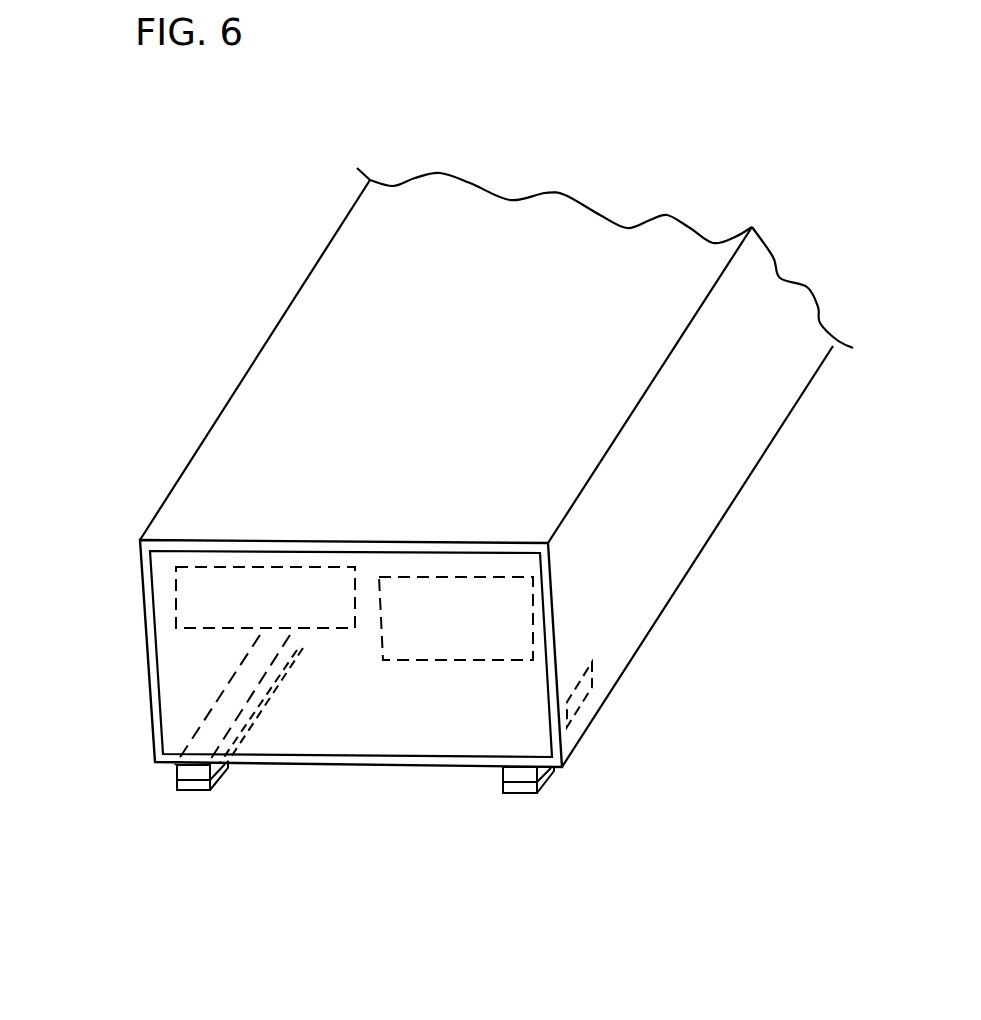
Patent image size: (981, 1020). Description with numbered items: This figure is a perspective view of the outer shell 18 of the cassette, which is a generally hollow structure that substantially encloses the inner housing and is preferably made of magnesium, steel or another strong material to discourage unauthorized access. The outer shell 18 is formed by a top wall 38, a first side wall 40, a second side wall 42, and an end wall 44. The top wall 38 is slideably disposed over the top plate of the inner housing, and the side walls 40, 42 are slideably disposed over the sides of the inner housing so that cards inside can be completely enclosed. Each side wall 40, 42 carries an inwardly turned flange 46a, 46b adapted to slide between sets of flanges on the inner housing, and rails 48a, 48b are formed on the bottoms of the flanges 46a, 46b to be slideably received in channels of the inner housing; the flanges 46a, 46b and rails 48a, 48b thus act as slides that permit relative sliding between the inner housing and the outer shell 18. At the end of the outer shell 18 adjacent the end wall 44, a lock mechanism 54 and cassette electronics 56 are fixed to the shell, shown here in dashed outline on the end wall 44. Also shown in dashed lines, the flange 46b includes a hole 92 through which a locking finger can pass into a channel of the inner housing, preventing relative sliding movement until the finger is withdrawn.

The outer shell 18 is at (220, 318).
The top wall 38 is at (542, 222).
The first side wall 40 is at (147, 668).
The second side wall 42 is at (707, 478).
The end wall 44 is at (165, 585).
The inwardly turned flange 46a is at (157, 765).
The inwardly turned flange 46b is at (558, 762).
The rail 48a is at (195, 783).
The rail 48b is at (520, 787).
The lock mechanism 54 is at (428, 678).
The cassette electronics 56 is at (267, 557).
The hole 92 is at (592, 692).